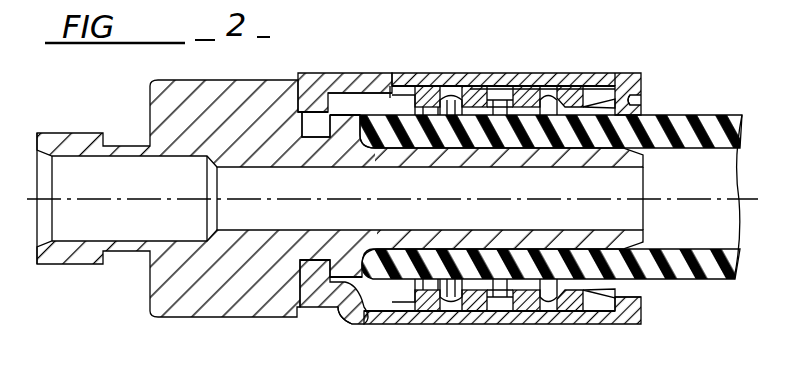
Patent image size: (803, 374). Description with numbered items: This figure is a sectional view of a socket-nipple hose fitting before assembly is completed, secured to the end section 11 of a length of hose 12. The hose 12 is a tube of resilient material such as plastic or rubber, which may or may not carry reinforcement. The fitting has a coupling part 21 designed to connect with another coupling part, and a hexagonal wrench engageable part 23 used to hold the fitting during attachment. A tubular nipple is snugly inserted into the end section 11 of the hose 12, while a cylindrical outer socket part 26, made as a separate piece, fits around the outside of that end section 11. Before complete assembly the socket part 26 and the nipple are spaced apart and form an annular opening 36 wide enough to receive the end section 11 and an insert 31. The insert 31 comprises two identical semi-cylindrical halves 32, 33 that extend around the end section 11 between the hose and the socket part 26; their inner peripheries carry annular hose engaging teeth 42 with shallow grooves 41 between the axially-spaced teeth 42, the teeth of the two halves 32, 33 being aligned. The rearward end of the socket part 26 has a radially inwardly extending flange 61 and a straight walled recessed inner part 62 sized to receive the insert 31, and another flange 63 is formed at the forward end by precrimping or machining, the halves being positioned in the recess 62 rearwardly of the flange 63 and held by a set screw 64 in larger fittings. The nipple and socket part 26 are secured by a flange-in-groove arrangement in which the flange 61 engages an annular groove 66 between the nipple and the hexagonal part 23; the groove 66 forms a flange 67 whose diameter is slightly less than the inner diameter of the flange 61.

The end section 11 is at (553, 258).
The hose 12 is at (727, 282).
The coupling part 21 is at (95, 128).
The hexagonal wrench engageable part 23 is at (190, 88).
The socket part 26 is at (417, 72).
The insert 31 is at (599, 72).
The semi-cylindrical half 32 is at (603, 107).
The semi-cylindrical half 33 is at (622, 306).
The annular opening 36 is at (358, 106).
The shallow grooves 41 is at (455, 110).
The annular hose engaging teeth 42 is at (520, 112).
The flange 61 is at (318, 103).
The recessed inner part 62 is at (568, 96).
The flange 63 is at (633, 100).
The set screw 64 is at (498, 88).
The annular groove 66 is at (318, 137).
The flange 67 is at (358, 325).